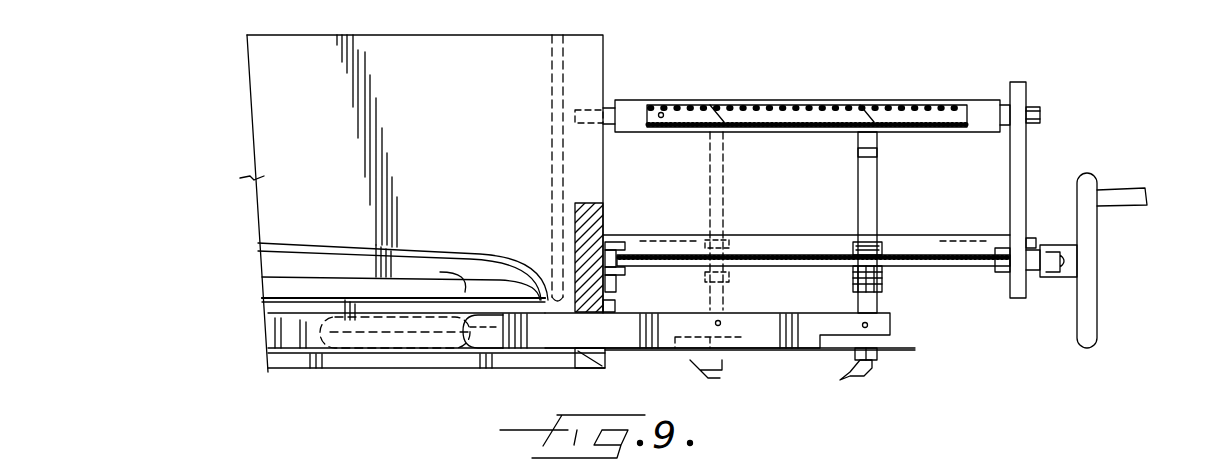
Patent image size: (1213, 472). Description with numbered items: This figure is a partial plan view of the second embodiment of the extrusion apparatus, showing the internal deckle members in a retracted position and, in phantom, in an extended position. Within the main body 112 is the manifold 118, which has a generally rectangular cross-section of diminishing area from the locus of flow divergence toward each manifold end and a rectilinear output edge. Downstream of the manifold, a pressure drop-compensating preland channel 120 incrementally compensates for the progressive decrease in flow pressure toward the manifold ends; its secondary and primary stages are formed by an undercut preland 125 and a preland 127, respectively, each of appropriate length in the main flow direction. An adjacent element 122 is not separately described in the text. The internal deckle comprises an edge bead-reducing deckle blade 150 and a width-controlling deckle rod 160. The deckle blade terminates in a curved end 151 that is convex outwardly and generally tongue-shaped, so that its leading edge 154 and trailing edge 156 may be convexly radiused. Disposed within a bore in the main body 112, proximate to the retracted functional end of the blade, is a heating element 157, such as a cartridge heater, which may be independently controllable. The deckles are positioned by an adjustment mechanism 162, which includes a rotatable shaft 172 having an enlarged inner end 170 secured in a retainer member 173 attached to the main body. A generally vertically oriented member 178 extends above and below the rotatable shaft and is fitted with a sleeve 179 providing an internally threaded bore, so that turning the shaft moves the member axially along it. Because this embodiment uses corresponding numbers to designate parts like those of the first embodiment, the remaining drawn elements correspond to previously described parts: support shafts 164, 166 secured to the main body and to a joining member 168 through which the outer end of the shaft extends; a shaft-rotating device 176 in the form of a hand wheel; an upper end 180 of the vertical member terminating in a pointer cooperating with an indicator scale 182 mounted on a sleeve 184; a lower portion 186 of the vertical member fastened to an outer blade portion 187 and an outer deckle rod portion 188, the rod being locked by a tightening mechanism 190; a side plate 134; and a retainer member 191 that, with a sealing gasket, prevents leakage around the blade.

The main body 112 is at (614, 52).
The manifold 118 is at (265, 245).
The preland channel 120 is at (265, 328).
The base board 122 is at (308, 370).
The undercut preland 125 is at (420, 326).
The preland 127 is at (365, 332).
The mounting block 134 is at (595, 205).
The deckle blade 150 is at (557, 344).
The curved end 151 is at (480, 332).
The leading edge 154 is at (432, 275).
The trailing edge 156 is at (458, 350).
The heating element 157 is at (555, 150).
The deckle rod 160 is at (895, 352).
The adjustment mechanism 162 is at (1055, 145).
The mount 164 is at (612, 100).
The frame bar 166 is at (805, 235).
The end post 168 is at (1010, 185).
The enlarged inner end 170 is at (607, 262).
The rotatable shaft 172 is at (965, 266).
The retainer member 173 is at (612, 240).
The hand wheel 176 is at (1097, 310).
The vertically oriented member 178 is at (880, 165).
The sleeve 179 is at (878, 245).
The pointer 180 is at (868, 105).
The scale 182 is at (783, 105).
The scale end 184 is at (960, 100).
The knurled nut 186 is at (876, 300).
The hidden bracket 187 is at (808, 313).
The lock nut 188 is at (850, 352).
The lever 190 is at (845, 378).
The bolt 191 is at (618, 312).